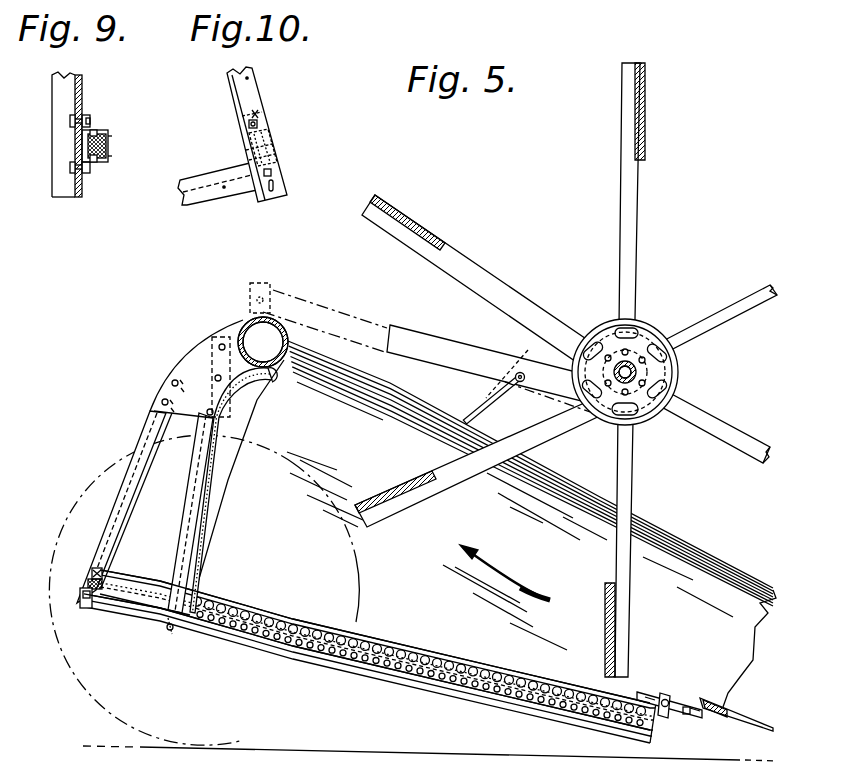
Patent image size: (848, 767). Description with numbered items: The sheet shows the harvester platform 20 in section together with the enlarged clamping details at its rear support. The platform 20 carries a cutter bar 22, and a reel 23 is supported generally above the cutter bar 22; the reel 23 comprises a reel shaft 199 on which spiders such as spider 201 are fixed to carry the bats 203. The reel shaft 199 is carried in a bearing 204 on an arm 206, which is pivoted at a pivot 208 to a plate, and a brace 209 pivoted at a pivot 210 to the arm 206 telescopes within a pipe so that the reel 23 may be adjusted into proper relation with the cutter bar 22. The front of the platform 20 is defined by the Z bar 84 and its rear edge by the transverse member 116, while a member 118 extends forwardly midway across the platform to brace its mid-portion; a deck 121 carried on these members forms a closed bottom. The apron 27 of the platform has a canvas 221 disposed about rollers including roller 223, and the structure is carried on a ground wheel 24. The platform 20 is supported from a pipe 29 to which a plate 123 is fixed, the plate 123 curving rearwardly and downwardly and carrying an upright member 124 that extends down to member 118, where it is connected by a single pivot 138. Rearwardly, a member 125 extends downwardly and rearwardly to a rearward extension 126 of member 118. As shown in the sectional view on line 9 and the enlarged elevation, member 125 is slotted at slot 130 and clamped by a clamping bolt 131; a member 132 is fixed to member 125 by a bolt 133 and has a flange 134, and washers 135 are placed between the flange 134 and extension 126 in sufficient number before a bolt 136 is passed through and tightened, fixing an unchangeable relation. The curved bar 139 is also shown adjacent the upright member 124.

In FIG. 5, the section line 9— 9 is at (104, 546).
In FIG. 5, the platform 20 is at (208, 584).
In FIG. 5, the cutter bar 22 is at (775, 690).
In FIG. 5, the reel 23 is at (645, 244).
In FIG. 5, the ground wheel 24 is at (299, 716).
In FIG. 5, the apron 27 is at (423, 650).
In FIG. 5, the pipe 29 is at (242, 330).
In FIG. 5, the Z bar 84 is at (655, 716).
In FIG. 5, the member 116 is at (163, 612).
In FIG. 9, the member 118 is at (106, 158).
In FIG. 10, the member 118 is at (190, 191).
In FIG. 5, the member 118 is at (218, 637).
In FIG. 5, the deck 121 is at (407, 688).
In FIG. 5, the plate 123 is at (205, 355).
In FIG. 5, the upright member 124 is at (202, 469).
In FIG. 9, the member 125 is at (82, 80).
In FIG. 10, the member 125 is at (250, 78).
In FIG. 5, the member 125 is at (127, 463).
In FIG. 9, the rearward extension 126 is at (108, 152).
In FIG. 10, the rearward extension 126 is at (223, 188).
In FIG. 5, the rearward extension 126 is at (120, 606).
In FIG. 9, the slot 130 is at (80, 186).
In FIG. 10, the slot 130 is at (276, 184).
In FIG. 9, the clamping bolt 131 is at (70, 168).
In FIG. 10, the clamping bolt 131 is at (272, 172).
In FIG. 5, the clamping bolt 131 is at (82, 593).
In FIG. 9, the member 132 is at (86, 116).
In FIG. 10, the member 132 is at (261, 109).
In FIG. 5, the member 132 is at (92, 572).
In FIG. 9, the bolt 133 is at (70, 120).
In FIG. 10, the bolt 133 is at (258, 124).
In FIG. 5, the bolt 133 is at (102, 569).
In FIG. 9, the flange 134 is at (108, 140).
In FIG. 9, the washers 135 is at (108, 146).
In FIG. 5, the washers 135 is at (85, 583).
In FIG. 9, the bolt 136 is at (100, 131).
In FIG. 10, the bolt 136 is at (266, 140).
In FIG. 5, the bolt 136 is at (103, 578).
In FIG. 5, the pivot 138 is at (168, 631).
In FIG. 5, the curved bar 139 is at (208, 482).
In FIG. 5, the reel shaft 199 is at (665, 370).
In FIG. 5, the spider 201 is at (623, 234).
In FIG. 5, the bats 203 is at (400, 205).
In FIG. 5, the bearing 204 is at (650, 333).
In FIG. 5, the arm 206 is at (441, 340).
In FIG. 5, the pivot 208 is at (272, 283).
In FIG. 5, the brace 209 is at (492, 398).
In FIG. 5, the pivot 210 is at (523, 371).
In FIG. 5, the canvas 221 is at (542, 654).
In FIG. 5, the roller 223 is at (478, 693).